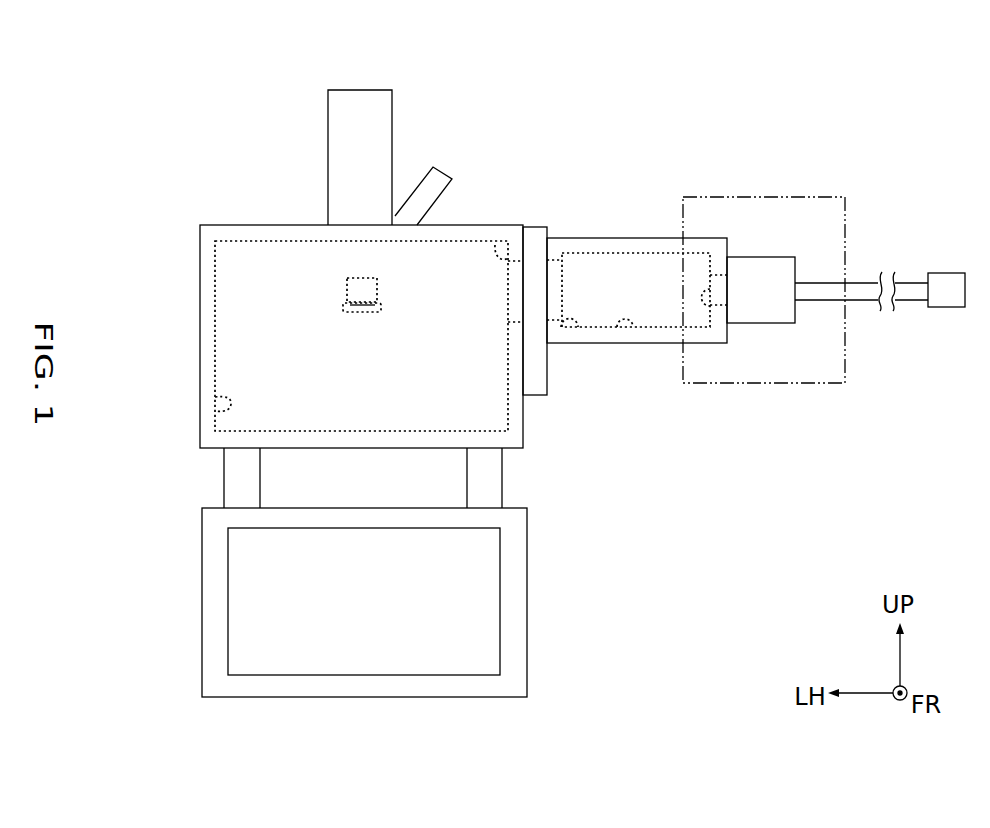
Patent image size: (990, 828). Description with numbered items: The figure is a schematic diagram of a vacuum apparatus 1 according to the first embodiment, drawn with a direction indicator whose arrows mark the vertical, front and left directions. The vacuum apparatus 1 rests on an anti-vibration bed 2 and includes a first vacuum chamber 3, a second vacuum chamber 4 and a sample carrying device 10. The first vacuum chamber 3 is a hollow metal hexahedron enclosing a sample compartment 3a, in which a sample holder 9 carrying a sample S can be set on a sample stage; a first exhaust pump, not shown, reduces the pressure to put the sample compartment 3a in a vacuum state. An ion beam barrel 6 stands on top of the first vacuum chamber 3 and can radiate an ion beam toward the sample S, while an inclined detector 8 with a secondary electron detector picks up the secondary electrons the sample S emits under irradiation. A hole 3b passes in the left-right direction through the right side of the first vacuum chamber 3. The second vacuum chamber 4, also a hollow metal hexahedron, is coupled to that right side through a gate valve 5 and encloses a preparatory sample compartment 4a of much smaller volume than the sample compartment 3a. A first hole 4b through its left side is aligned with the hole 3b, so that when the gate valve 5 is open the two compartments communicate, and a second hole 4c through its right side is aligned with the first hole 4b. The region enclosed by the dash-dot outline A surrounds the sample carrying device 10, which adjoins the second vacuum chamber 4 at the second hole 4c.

The vacuum apparatus 1 is at (163, 128).
The anti-vibration bed 2 is at (208, 555).
The first vacuum chamber 3 is at (200, 367).
The sample compartment 3a is at (215, 397).
The hole 3b is at (495, 245).
The second vacuum chamber 4 is at (632, 238).
The preparatory sample compartment 4a is at (622, 343).
The first hole 4b is at (578, 343).
The second hole 4c is at (704, 343).
The gate valve 5 is at (535, 227).
The ion beam barrel 6 is at (367, 105).
The detector 8 is at (433, 167).
The sample holder 9 is at (343, 310).
The sample S is at (347, 280).
The region A is at (757, 197).
The sample carrying device 10 is at (788, 248).